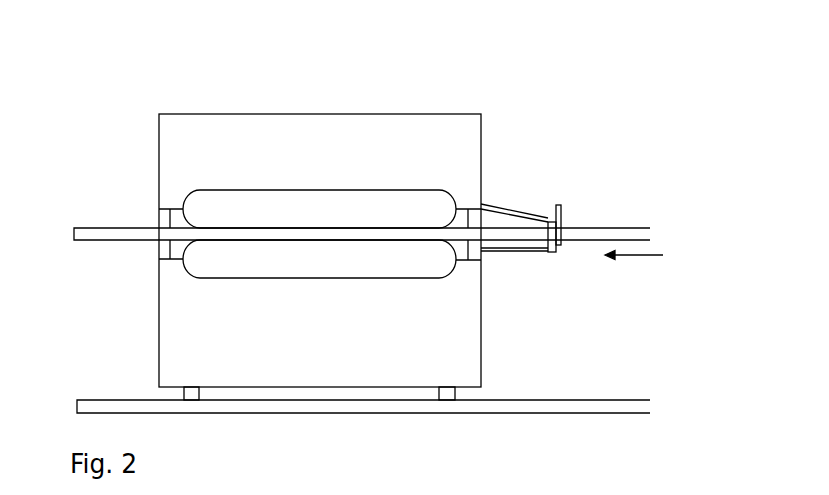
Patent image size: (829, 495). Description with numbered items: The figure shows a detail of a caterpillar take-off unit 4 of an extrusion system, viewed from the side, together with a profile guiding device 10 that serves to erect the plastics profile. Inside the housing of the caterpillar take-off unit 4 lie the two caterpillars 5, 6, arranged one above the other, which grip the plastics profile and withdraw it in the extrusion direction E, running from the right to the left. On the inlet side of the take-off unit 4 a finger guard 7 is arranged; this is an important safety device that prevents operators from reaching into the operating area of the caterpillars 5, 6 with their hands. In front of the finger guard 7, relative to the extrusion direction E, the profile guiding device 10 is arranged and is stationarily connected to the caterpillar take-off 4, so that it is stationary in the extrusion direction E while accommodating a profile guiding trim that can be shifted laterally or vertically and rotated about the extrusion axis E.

The caterpillar take-off unit 4 is at (245, 150).
The caterpillar 5 is at (390, 207).
The caterpillar 6 is at (390, 262).
The finger guard 7 is at (562, 198).
The profile guiding device 10 is at (582, 228).
The extrusion direction E is at (651, 258).